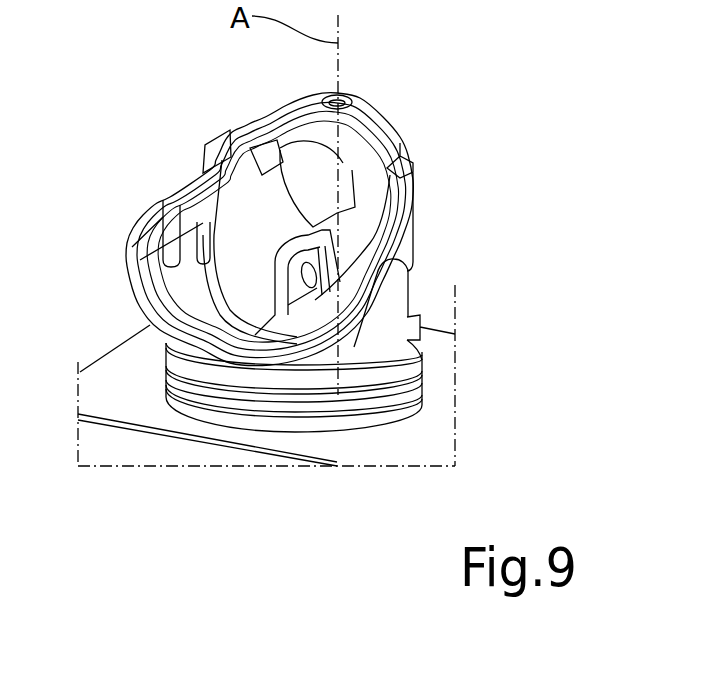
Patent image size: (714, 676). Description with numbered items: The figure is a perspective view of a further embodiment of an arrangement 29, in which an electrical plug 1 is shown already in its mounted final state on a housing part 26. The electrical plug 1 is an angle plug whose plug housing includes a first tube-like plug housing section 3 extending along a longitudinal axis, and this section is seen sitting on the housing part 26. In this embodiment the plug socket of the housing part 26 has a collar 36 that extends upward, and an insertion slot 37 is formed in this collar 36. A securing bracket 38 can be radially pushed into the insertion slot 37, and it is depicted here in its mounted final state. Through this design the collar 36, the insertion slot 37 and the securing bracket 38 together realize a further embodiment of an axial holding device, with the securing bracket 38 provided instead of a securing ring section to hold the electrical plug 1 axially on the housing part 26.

The electrical plug 1 is at (422, 138).
The first tube-like plug housing section 3 is at (424, 266).
The arrangement 29 is at (478, 194).
The collar 36 is at (428, 354).
The housing part 26 is at (408, 442).
The insertion slot 37 is at (350, 424).
The securing bracket 38 is at (293, 428).